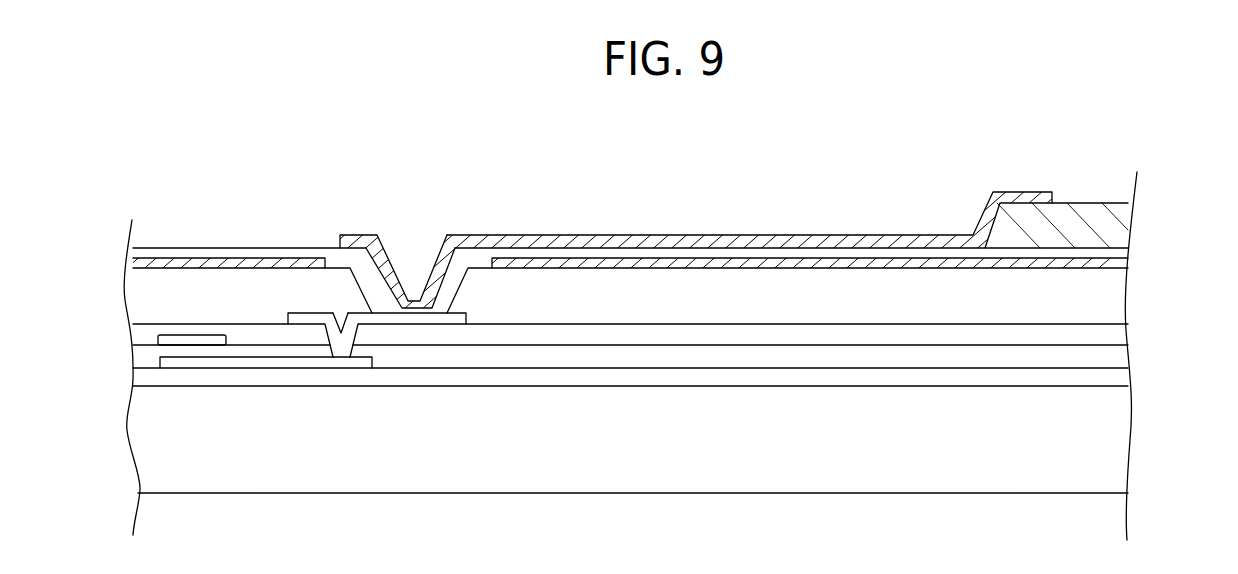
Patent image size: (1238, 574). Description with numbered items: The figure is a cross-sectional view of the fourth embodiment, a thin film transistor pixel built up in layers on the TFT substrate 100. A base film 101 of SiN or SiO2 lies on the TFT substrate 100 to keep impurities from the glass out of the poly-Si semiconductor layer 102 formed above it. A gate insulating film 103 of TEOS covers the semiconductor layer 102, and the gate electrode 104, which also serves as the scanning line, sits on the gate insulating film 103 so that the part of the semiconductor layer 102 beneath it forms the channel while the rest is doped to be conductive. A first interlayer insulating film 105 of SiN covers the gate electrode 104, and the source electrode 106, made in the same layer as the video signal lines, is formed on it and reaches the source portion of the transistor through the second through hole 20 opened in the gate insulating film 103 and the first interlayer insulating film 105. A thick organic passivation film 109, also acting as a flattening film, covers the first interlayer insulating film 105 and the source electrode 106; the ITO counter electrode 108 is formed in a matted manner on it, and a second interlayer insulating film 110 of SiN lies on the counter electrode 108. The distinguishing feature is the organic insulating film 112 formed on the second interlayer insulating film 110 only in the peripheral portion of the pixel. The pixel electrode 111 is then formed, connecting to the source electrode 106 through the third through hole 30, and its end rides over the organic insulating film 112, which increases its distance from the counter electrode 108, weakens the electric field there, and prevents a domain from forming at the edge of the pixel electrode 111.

The second through hole 20 is at (342, 312).
The third through hole 30 is at (412, 271).
The TFT substrate 100 is at (1113, 440).
The base film 101 is at (1113, 382).
The semiconductor layer 102 is at (263, 362).
The gate insulating film 103 is at (1113, 357).
The gate electrode 104 is at (188, 338).
The first interlayer insulating film 105 is at (1113, 333).
The source electrode 106 is at (400, 318).
The counter electrode 108 is at (135, 262).
The organic passivation film 109 is at (140, 292).
The second interlayer insulating film 110 is at (135, 254).
The pixel electrode 111 is at (867, 242).
The organic insulating film 112 is at (1113, 220).